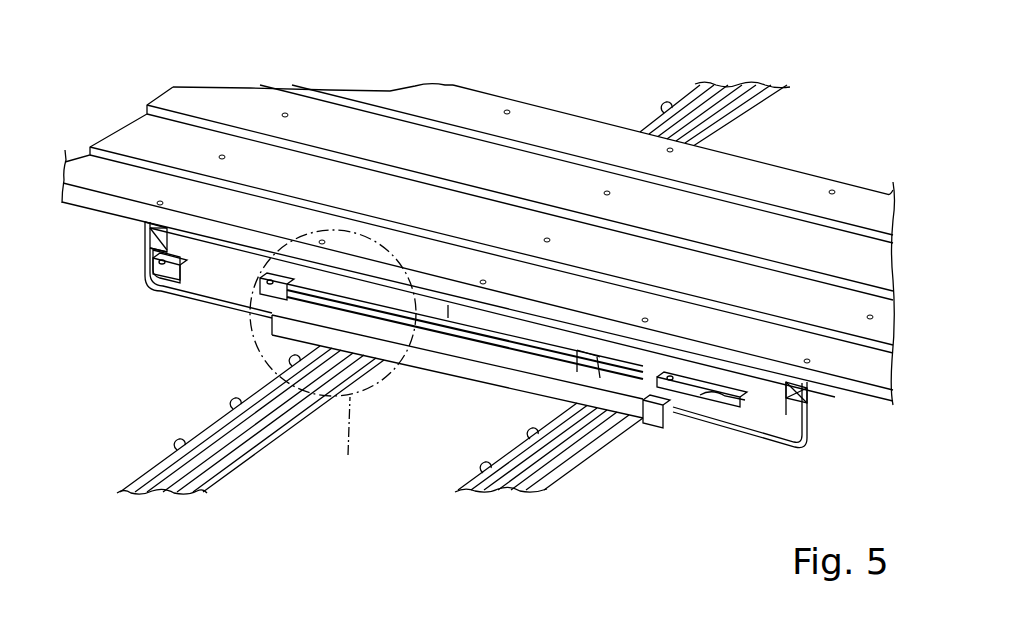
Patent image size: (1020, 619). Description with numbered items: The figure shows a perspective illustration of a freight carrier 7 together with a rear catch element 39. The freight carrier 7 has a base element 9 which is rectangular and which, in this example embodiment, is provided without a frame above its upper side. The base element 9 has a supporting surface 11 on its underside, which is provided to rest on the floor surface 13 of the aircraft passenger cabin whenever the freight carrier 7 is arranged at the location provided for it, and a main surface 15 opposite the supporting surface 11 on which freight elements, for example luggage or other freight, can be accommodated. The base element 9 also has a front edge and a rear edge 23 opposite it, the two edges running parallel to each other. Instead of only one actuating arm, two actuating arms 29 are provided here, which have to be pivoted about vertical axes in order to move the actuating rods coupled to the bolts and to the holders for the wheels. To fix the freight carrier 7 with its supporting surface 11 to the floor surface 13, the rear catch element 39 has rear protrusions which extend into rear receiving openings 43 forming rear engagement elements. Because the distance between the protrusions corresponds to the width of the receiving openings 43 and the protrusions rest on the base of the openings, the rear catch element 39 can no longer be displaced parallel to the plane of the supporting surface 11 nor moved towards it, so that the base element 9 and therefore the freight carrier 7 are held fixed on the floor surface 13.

The freight carrier 7 is at (591, 94).
The base element 9 is at (867, 390).
The supporting surface 11 is at (177, 292).
The floor surface 13 is at (410, 439).
The main surface 15 is at (592, 196).
The rear edge 23 is at (125, 289).
The actuating arm 29 is at (237, 287).
The rear catch element 39 is at (642, 425).
The rear receiving opening 43 is at (340, 303).